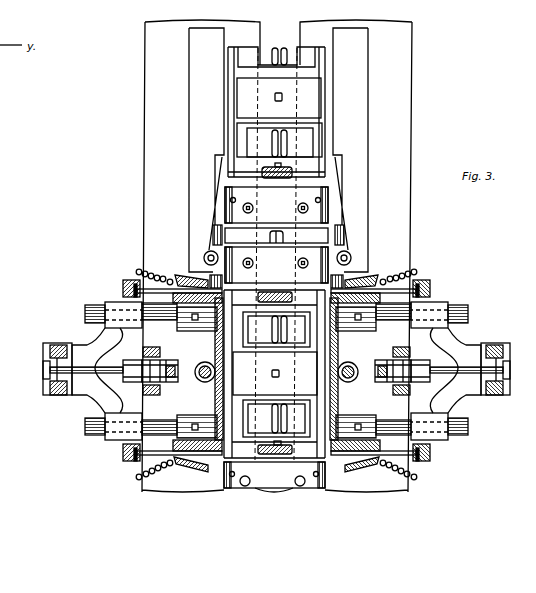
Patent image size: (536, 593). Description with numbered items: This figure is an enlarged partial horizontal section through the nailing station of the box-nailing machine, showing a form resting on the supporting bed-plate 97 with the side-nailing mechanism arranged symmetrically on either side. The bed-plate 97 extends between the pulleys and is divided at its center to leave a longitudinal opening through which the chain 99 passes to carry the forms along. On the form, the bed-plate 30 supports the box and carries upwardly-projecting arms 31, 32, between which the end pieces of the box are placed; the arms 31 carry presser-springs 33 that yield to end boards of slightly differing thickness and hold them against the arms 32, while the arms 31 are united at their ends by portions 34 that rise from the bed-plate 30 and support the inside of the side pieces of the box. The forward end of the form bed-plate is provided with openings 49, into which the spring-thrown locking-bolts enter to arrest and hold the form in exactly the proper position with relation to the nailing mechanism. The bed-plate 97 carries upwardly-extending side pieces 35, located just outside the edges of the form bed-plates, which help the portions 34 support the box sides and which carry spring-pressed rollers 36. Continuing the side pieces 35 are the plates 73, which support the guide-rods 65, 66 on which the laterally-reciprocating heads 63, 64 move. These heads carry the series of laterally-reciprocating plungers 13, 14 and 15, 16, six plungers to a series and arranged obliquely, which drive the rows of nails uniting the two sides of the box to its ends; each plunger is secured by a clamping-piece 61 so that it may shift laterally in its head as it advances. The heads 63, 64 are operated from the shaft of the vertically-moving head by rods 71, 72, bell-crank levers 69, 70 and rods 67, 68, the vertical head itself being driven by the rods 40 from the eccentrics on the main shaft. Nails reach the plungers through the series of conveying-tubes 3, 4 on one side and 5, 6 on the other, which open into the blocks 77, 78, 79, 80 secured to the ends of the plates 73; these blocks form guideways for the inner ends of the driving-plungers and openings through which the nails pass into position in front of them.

The conveying-tubes 3 is at (146, 271).
The conveying-tubes 4 is at (158, 471).
The conveying-tubes 5 is at (399, 274).
The conveying-tubes 6 is at (393, 472).
The laterally-reciprocating plungers 13 is at (158, 293).
The laterally-reciprocating plungers 14 is at (155, 451).
The laterally-reciprocating plungers 15 is at (396, 293).
The laterally-reciprocating plungers 16 is at (392, 455).
The bed-plate 30 is at (278, 242).
The arms 31 is at (274, 307).
The arms 32 is at (276, 339).
The presser-springs 33 is at (279, 167).
The portions 34 is at (277, 254).
The side pieces 35 is at (224, 127).
The spring-pressed rollers 36 is at (205, 256).
The rods 40 is at (205, 366).
The openings 49 is at (235, 203).
The clamping-piece 61 is at (123, 285).
The laterally-reciprocating head 63 is at (103, 342).
The laterally-reciprocating head 64 is at (458, 332).
The guide-rod 65 is at (158, 320).
The guide-rod 66 is at (462, 313).
The rod 67 is at (441, 369).
The rod 68 is at (114, 367).
The bell-crank lever 69 is at (423, 382).
The bell-crank lever 70 is at (128, 382).
The rod 71 is at (365, 375).
The rod 72 is at (180, 378).
The upwardly-extending plates 73 is at (215, 340).
The block 77 is at (181, 275).
The block 78 is at (190, 468).
The block 79 is at (372, 275).
The block 80 is at (362, 468).
The supporting bed-plate 97 is at (416, 487).
The chain 99 is at (278, 430).